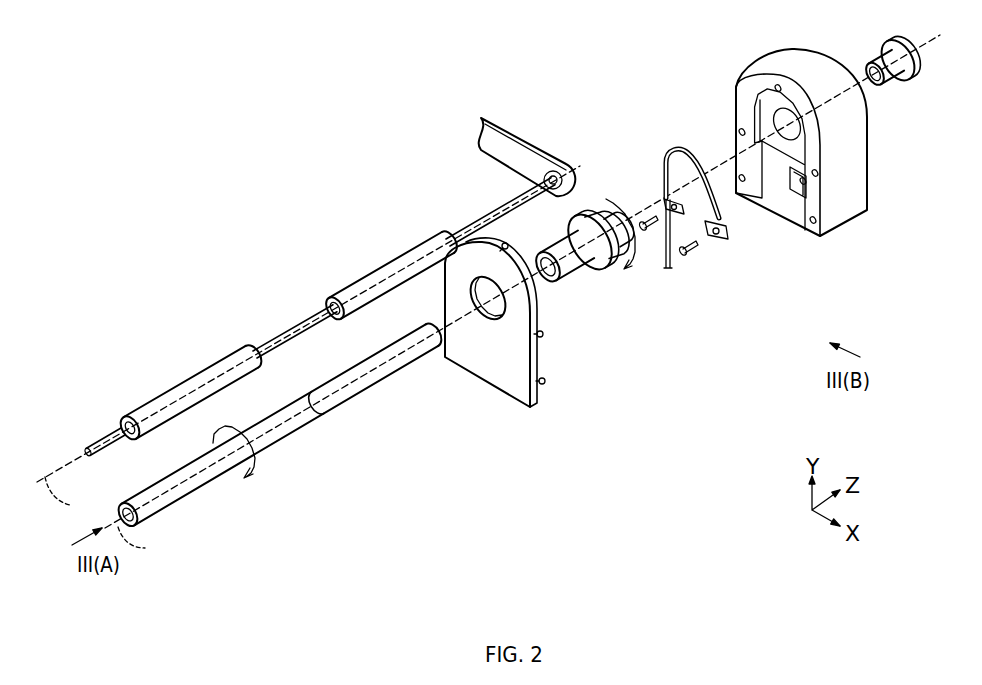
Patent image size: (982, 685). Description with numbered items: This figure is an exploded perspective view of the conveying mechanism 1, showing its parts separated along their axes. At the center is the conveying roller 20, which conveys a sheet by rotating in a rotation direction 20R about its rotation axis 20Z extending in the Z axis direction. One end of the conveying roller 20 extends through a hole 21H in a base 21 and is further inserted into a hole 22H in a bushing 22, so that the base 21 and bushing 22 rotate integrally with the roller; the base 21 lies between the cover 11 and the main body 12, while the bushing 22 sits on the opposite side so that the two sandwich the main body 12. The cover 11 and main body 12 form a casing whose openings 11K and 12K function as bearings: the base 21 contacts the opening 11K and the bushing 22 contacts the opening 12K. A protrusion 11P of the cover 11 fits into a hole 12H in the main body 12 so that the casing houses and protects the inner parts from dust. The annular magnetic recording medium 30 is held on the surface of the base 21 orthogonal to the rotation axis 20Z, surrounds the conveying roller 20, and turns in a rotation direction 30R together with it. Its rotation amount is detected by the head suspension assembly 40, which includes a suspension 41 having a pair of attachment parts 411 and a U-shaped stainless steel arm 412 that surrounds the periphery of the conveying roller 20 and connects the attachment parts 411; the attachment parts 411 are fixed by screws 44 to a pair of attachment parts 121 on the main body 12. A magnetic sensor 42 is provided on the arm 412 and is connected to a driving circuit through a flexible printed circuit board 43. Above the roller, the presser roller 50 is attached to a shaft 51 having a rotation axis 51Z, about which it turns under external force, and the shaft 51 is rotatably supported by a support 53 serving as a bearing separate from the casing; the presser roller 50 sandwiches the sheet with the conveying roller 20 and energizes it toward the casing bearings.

The conveying mechanism 1 is at (379, 76).
The cover 11 is at (532, 349).
The opening 11K is at (480, 308).
The protrusion 11P is at (545, 382).
The main body 12 is at (810, 146).
The opening 12K is at (768, 108).
The hole 12H is at (819, 238).
The attachment parts 121 is at (742, 132).
The conveying roller 20 is at (278, 441).
The rotation direction 20R is at (258, 468).
The rotation axis 20Z is at (145, 542).
The base 21 is at (585, 248).
The hole 21H is at (553, 270).
The bushing 22 is at (887, 72).
The hole 22H is at (873, 66).
The magnetic recording medium 30 is at (585, 236).
The rotation direction 30R is at (609, 197).
The head suspension assembly 40 is at (634, 76).
The suspension 41 is at (719, 227).
The attachment parts 411 is at (713, 240).
The arm 412 is at (728, 232).
The magnetic sensor 42 is at (729, 182).
The flexible printed circuit board 43 is at (668, 270).
The screws 44 is at (683, 256).
The presser roller 50 is at (382, 272).
The shaft 51 is at (290, 327).
The rotation axis 51Z is at (73, 497).
The support 53 is at (510, 142).